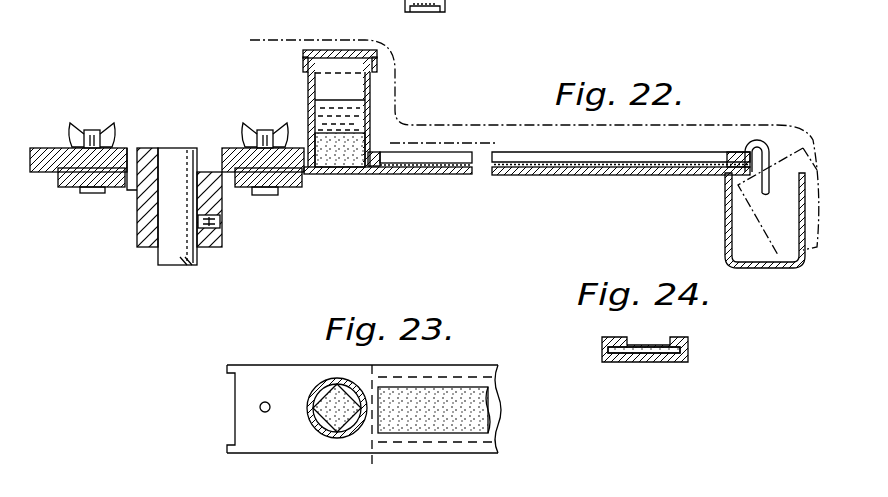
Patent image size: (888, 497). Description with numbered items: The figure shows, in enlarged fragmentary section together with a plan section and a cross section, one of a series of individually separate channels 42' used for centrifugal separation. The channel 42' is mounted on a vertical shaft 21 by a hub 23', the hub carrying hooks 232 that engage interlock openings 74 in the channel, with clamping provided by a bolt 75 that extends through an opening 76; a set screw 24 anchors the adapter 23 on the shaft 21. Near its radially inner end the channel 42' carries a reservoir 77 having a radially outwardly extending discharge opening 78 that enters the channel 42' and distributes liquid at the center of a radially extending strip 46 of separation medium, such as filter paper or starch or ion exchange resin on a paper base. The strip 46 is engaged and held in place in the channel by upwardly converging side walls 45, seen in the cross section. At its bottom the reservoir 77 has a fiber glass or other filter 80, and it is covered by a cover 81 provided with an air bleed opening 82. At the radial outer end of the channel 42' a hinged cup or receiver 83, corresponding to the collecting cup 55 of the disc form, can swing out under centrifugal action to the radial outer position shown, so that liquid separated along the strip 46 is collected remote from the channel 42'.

In FIG. 22, the shaft 21 is at (178, 258).
In FIG. 22, the adapter 23 is at (355, 130).
In FIG. 22, the hub 23' is at (208, 206).
In FIG. 22, the hooks 232 is at (212, 146).
In FIG. 23, the hooks 232 is at (230, 369).
In FIG. 22, the set screw 24 is at (222, 222).
In FIG. 22, the channel 42' is at (565, 128).
In FIG. 23, the channel 42' is at (485, 361).
In FIG. 24, the channel 42' is at (591, 330).
In FIG. 24, the upwardly converging side walls 45 is at (660, 342).
In FIG. 22, the strip of separation medium 46 is at (612, 168).
In FIG. 23, the strip of separation medium 46 is at (472, 414).
In FIG. 24, the strip of separation medium 46 is at (627, 362).
In FIG. 22, the collecting cup 55 is at (727, 233).
In FIG. 22, the interlock openings 74 is at (240, 193).
In FIG. 22, the bolt 75 is at (273, 129).
In FIG. 23, the opening 76 is at (260, 408).
In FIG. 22, the reservoir 77 is at (368, 96).
In FIG. 23, the reservoir 77 is at (337, 436).
In FIG. 22, the discharge opening 78 is at (376, 168).
In FIG. 23, the discharge opening 78 is at (373, 431).
In FIG. 22, the filter 80 is at (350, 168).
In FIG. 22, the cover 81 is at (321, 51).
In FIG. 22, the air bleed opening 82 is at (341, 50).
In FIG. 22, the cup or receiver 83 is at (764, 268).